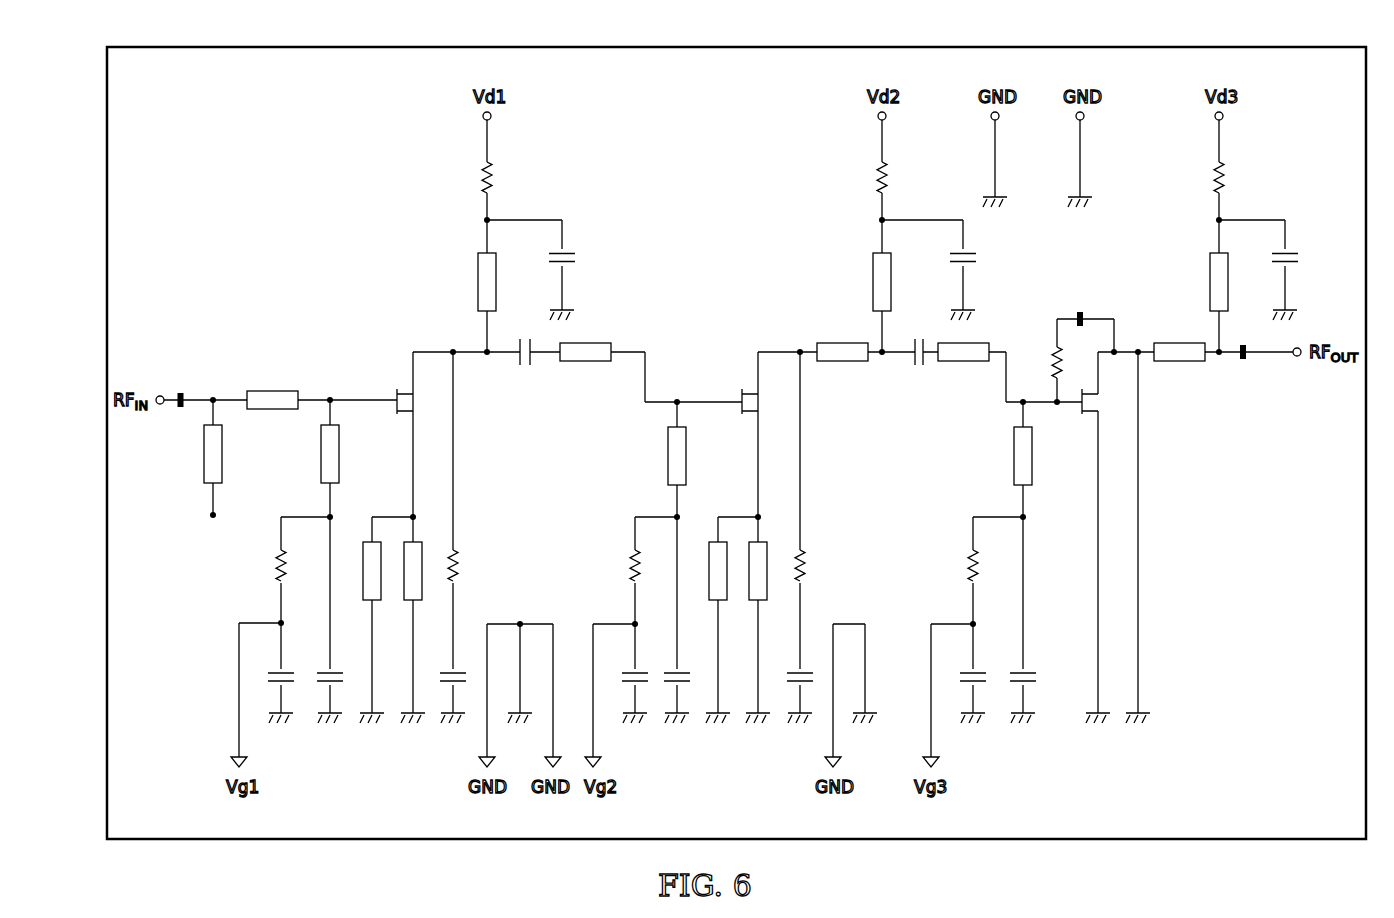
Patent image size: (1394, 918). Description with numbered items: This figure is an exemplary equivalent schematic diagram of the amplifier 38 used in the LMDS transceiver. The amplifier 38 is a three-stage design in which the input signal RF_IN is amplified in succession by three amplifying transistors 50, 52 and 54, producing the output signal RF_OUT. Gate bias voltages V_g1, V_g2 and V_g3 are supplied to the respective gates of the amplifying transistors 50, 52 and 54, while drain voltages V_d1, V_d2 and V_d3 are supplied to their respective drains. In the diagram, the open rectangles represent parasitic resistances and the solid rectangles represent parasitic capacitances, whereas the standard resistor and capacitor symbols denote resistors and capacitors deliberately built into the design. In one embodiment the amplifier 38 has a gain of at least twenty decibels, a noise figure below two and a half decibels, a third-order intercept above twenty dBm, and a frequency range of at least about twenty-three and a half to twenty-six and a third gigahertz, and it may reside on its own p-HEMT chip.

The amplifier 38 is at (363, 840).
The amplifying transistor 50 is at (397, 396).
The amplifying transistor 52 is at (742, 394).
The amplifying transistor 54 is at (1082, 408).